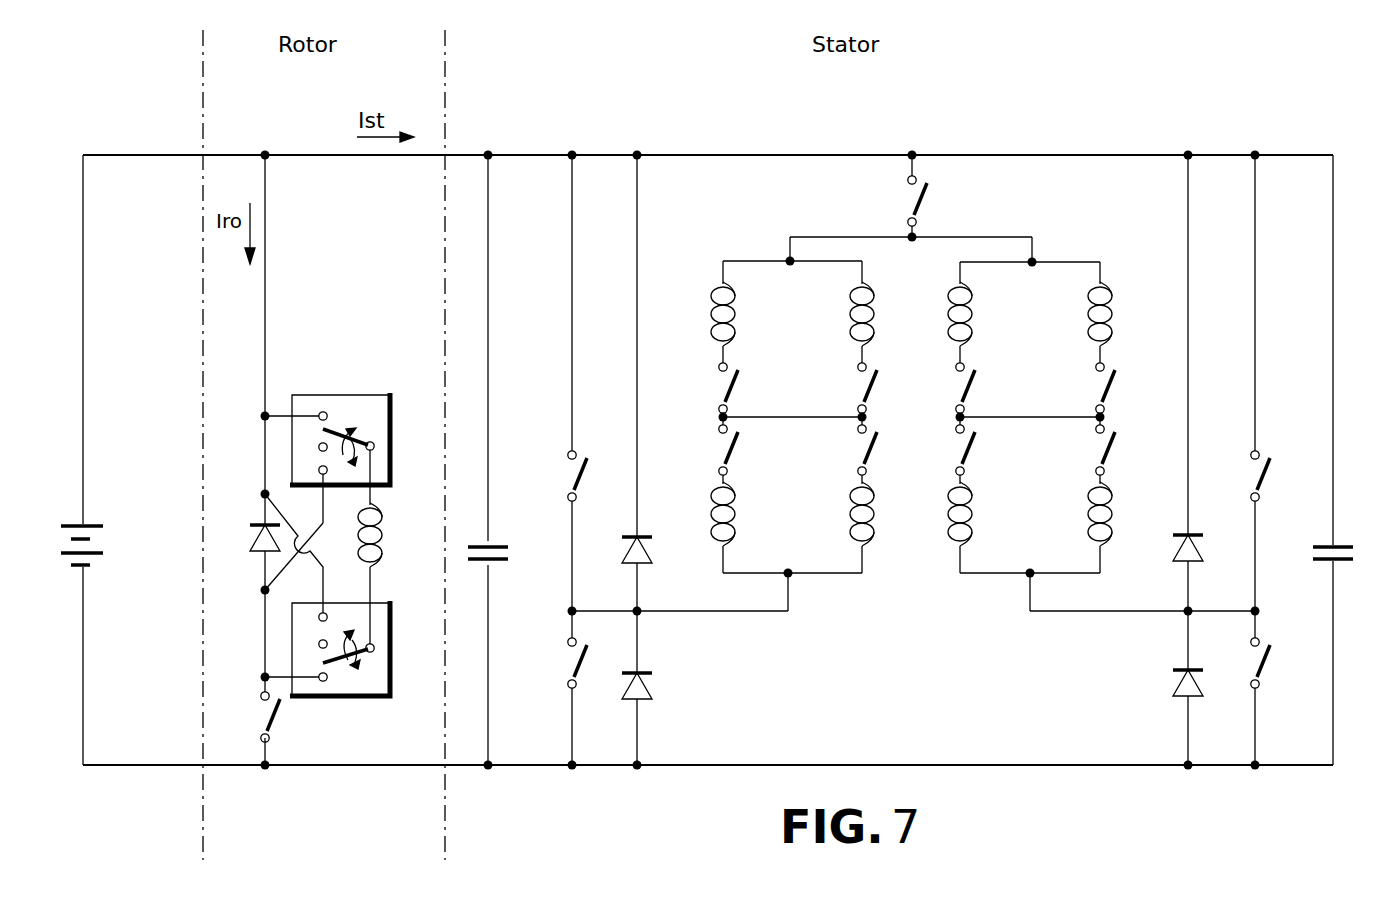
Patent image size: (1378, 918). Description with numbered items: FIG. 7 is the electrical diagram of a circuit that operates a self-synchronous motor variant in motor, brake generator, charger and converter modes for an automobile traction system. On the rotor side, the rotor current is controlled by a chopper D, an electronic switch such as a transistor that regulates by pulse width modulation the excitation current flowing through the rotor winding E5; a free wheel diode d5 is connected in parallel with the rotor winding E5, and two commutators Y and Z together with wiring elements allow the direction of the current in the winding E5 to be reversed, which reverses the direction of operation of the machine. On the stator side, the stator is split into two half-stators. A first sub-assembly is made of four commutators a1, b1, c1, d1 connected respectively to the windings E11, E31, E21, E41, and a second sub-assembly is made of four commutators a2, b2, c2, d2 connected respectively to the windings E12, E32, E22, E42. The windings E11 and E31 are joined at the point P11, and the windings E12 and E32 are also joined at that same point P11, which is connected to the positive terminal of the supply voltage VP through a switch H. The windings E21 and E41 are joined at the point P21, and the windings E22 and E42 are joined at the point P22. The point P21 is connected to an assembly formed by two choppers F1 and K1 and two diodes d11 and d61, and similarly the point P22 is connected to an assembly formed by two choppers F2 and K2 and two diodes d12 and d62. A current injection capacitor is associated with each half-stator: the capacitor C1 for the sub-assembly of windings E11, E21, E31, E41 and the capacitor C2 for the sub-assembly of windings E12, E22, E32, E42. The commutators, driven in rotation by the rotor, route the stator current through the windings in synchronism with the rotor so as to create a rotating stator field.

The supply source VP is at (88, 531).
The free wheel diode d5 is at (248, 543).
The chopper D is at (279, 728).
The commutator Y is at (363, 410).
The commutator Z is at (372, 698).
The rotor winding E5 is at (386, 547).
The current injection capacitor C1 is at (497, 460).
The chopper F1 is at (559, 476).
The chopper K1 is at (559, 663).
The diode d11 is at (658, 550).
The diode d61 is at (658, 686).
The switch H is at (925, 201).
The point P11 is at (908, 236).
The winding E11 is at (746, 312).
The winding E31 is at (885, 312).
The winding E12 is at (983, 312).
The winding E32 is at (1123, 312).
The commutator a1 is at (741, 394).
The commutator b1 is at (880, 394).
The commutator c1 is at (740, 454).
The commutator d1 is at (880, 454).
The commutator a2 is at (978, 394).
The commutator b2 is at (1118, 394).
The commutator c2 is at (977, 454).
The commutator d2 is at (1118, 454).
The winding E21 is at (746, 527).
The winding E41 is at (885, 527).
The winding E22 is at (983, 527).
The winding E42 is at (1123, 527).
The point P21 is at (793, 577).
The point P22 is at (1026, 578).
The diode d12 is at (1210, 549).
The diode d62 is at (1205, 699).
The chopper F2 is at (1275, 476).
The chopper K2 is at (1276, 663).
The current injection capacitor C2 is at (1341, 571).